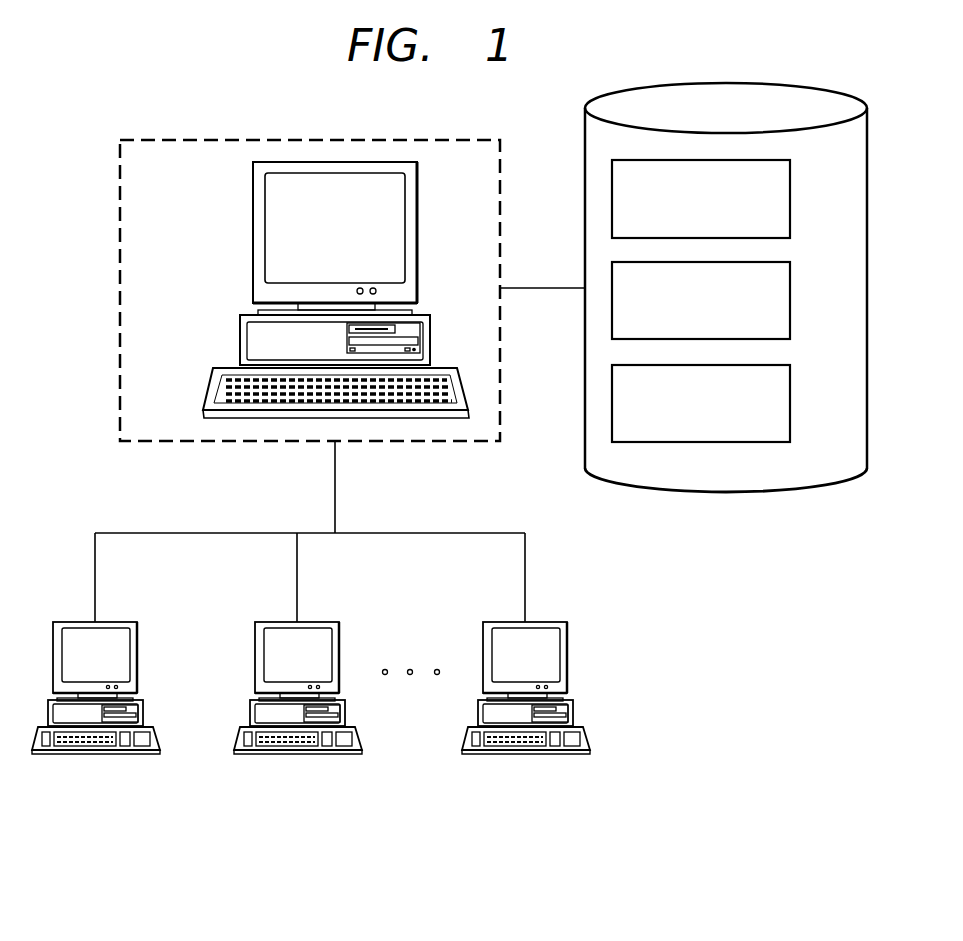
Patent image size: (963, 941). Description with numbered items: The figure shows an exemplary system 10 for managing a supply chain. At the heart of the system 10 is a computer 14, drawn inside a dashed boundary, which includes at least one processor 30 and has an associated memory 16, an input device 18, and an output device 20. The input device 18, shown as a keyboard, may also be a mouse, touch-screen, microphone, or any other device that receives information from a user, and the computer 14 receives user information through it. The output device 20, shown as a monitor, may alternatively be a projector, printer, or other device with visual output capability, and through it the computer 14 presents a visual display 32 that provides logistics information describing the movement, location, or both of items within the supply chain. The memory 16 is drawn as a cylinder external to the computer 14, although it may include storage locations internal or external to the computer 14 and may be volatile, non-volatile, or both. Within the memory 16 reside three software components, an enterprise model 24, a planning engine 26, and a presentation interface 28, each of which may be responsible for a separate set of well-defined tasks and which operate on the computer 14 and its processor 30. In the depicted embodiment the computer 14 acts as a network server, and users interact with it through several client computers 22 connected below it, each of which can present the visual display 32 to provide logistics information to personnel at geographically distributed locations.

The system 10 is at (185, 61).
The computer 14 is at (120, 290).
The memory 16 is at (726, 493).
The input device 18 is at (207, 391).
The output device 20 is at (253, 233).
The client computers 22 is at (97, 754).
The enterprise model 24 is at (790, 199).
The planning engine 26 is at (790, 300).
The presentation interface 28 is at (790, 402).
The processor 30 is at (240, 343).
The visual display 32 is at (351, 244).